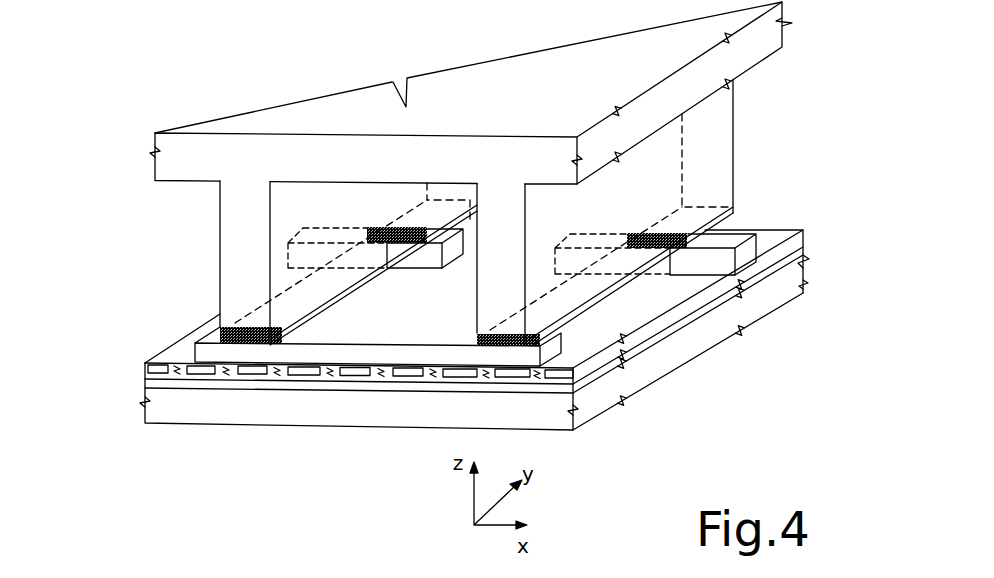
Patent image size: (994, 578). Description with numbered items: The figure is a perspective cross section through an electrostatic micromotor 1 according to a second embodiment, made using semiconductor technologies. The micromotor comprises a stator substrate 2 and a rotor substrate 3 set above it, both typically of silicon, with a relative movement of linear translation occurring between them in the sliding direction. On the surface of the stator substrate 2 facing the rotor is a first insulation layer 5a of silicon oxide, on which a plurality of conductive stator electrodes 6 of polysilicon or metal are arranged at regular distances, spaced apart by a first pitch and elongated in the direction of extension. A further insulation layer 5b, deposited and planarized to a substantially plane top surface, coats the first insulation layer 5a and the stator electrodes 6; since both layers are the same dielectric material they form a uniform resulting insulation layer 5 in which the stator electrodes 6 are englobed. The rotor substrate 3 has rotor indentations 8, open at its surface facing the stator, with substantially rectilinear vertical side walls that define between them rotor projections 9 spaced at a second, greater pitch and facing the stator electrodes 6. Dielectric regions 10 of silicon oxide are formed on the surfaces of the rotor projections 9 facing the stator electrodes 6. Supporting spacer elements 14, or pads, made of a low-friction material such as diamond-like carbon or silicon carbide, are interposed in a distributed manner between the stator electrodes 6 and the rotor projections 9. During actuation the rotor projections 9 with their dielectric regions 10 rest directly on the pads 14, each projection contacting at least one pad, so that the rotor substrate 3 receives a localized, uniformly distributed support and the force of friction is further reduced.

The electrostatic micromotor 1 is at (265, 98).
The stator substrate 2 is at (787, 282).
The rotor substrate 3 is at (170, 146).
The resulting insulation layer 5 is at (144, 363).
The first insulation layer 5a is at (808, 251).
The further insulation layer 5b is at (800, 242).
The stator electrodes 6 is at (262, 376).
The rotor indentations 8 is at (272, 195).
The rotor projections 9 is at (232, 201).
The dielectric regions 10 is at (212, 342).
The supporting spacer elements 14 is at (417, 257).